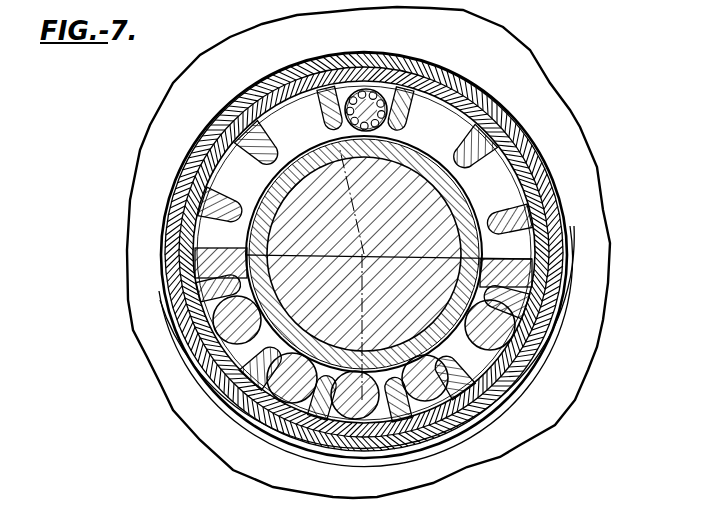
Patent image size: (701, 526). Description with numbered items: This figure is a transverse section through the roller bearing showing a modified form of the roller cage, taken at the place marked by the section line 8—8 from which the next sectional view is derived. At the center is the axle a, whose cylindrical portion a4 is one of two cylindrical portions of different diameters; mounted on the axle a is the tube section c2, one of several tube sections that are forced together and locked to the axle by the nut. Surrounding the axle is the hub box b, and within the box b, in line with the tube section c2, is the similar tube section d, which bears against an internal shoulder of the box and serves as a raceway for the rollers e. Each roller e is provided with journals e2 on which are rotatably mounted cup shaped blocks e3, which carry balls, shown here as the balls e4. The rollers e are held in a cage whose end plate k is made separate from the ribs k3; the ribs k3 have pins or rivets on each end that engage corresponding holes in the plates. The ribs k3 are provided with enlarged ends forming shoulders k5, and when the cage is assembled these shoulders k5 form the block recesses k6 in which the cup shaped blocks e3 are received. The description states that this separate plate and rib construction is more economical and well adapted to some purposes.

The section line 8— 8 is at (315, 53).
The axle a is at (480, 243).
The cylindrical portion of axle a4 is at (283, 237).
The hub box b is at (545, 177).
The tube section c2 is at (207, 172).
The tube section d is at (267, 100).
The rollers e is at (277, 399).
The journals e2 is at (369, 100).
The cup shaped blocks e3 is at (369, 93).
The cable core e4 is at (381, 100).
The end plate k is at (528, 154).
The ribs k3 is at (508, 212).
The shoulders k5 is at (468, 130).
The block recesses k6 is at (466, 148).